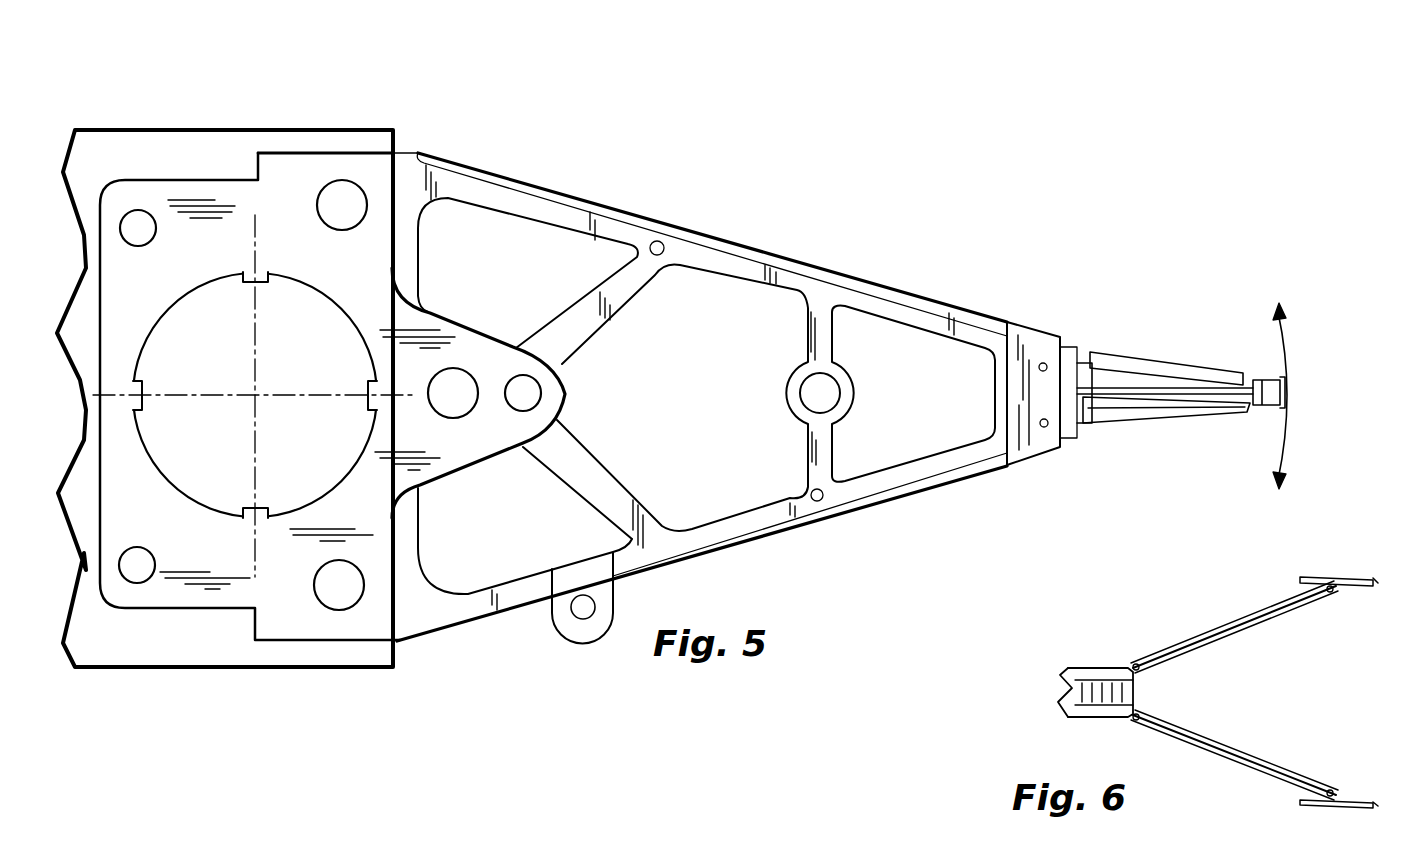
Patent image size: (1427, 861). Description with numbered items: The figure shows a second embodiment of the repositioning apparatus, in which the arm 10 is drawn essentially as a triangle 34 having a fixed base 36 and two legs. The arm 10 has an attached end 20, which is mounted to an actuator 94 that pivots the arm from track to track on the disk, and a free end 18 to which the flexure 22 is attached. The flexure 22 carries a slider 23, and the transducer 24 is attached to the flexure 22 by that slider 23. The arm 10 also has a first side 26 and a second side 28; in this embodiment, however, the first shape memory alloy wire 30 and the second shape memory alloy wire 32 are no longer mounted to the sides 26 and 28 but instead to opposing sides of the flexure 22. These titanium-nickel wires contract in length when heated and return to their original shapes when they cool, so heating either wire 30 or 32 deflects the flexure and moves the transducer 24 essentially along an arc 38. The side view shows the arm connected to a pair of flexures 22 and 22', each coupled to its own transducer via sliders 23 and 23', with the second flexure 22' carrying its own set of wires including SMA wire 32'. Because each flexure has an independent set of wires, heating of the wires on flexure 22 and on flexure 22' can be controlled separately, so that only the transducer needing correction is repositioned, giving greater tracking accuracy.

In FIG. 5, the arm 10 is at (507, 105).
In FIG. 5, the free end 18 is at (1050, 447).
In FIG. 5, the attached end 20 is at (167, 180).
In FIG. 5, the flexure 22 is at (1166, 352).
In FIG. 6, the flexure 22 is at (1234, 627).
In FIG. 6, the flexure 22' is at (1238, 755).
In FIG. 5, the slider 23 is at (1304, 381).
In FIG. 6, the slider 23 is at (1290, 576).
In FIG. 6, the slider 23' is at (1291, 800).
In FIG. 5, the transducer 24 is at (1283, 401).
In FIG. 6, the transducer 24 is at (1373, 582).
In FIG. 5, the first side 26 is at (957, 318).
In FIG. 5, the second side 28 is at (972, 452).
In FIG. 5, the first shape memory alloy wire 30 is at (1106, 353).
In FIG. 6, the first shape memory alloy wire 30 is at (1155, 655).
In FIG. 5, the second shape memory alloy wire 32 is at (1166, 431).
In FIG. 6, the shape memory alloy wire 32' is at (1234, 744).
In FIG. 5, the triangle 34 is at (563, 203).
In FIG. 5, the fixed base 36 is at (403, 257).
In FIG. 5, the arc 38 is at (1290, 347).
In FIG. 5, the actuator 94 is at (205, 128).